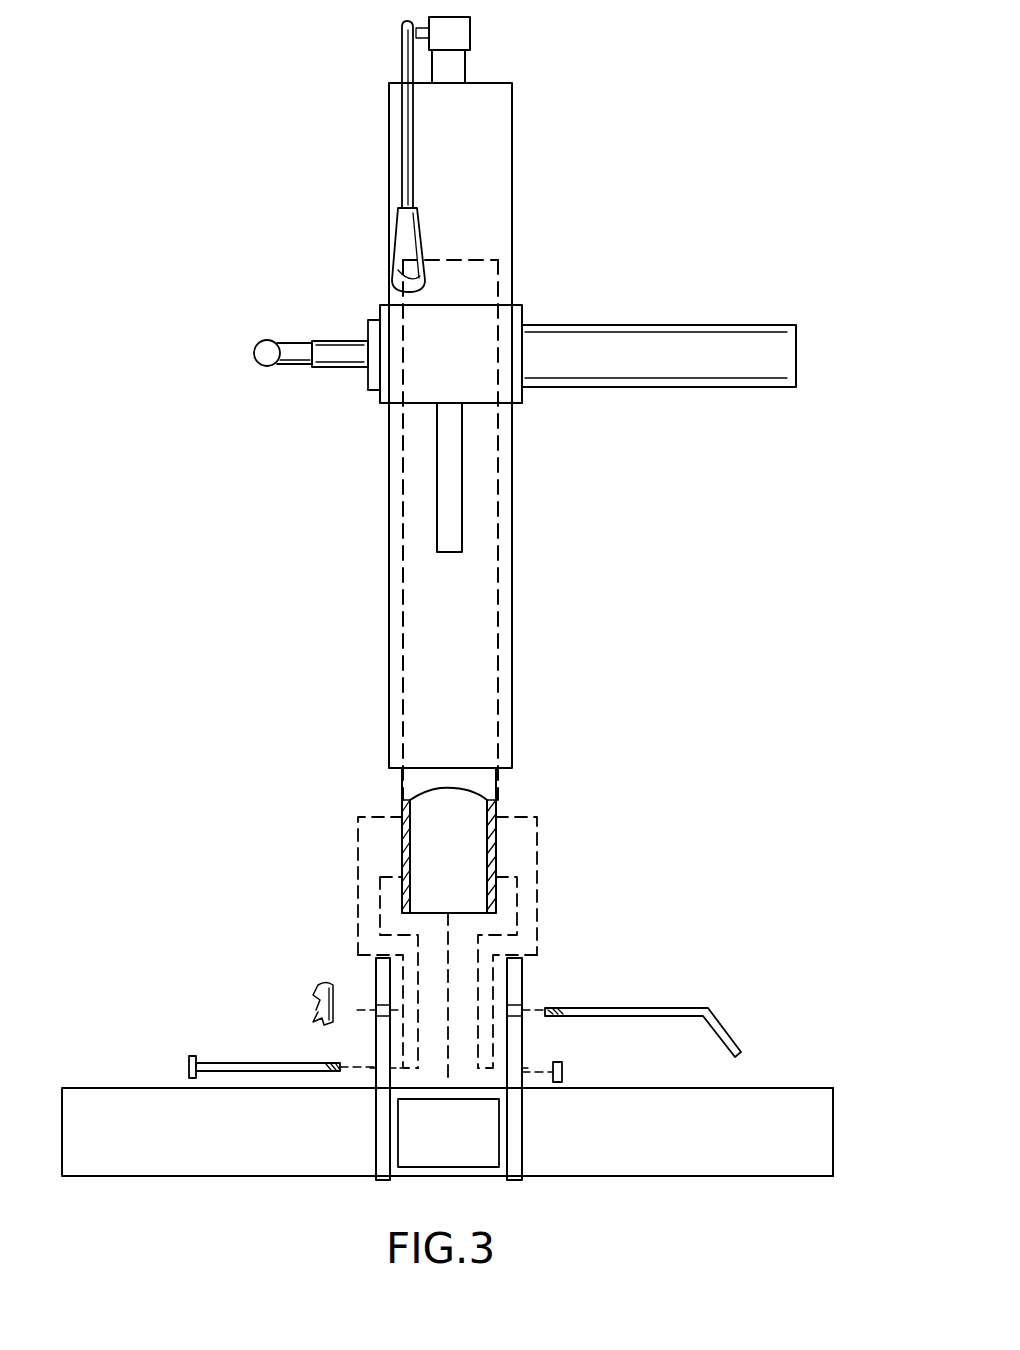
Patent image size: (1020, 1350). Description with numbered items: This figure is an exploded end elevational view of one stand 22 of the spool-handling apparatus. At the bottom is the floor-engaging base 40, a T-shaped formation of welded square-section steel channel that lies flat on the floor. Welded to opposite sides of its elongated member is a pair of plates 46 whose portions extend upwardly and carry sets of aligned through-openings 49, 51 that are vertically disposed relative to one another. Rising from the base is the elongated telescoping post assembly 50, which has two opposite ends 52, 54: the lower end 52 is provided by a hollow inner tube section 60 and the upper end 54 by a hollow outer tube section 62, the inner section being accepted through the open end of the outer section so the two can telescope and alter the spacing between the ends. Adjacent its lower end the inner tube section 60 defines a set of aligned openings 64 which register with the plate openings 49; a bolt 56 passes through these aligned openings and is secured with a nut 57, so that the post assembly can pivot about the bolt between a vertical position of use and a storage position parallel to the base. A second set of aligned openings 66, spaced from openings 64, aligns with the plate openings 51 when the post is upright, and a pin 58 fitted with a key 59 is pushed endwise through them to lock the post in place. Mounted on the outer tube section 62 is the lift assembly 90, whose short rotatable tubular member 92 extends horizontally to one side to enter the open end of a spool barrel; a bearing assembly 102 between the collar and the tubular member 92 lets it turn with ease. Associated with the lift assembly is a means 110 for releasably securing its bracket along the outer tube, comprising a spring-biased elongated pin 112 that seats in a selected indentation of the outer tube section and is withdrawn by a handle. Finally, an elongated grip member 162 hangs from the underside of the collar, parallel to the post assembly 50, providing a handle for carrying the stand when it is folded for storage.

The stand 22 is at (833, 1130).
The floor-engaging base 40 is at (66, 1130).
The plates 46 is at (376, 1036).
The through-openings 49 is at (376, 1066).
The telescoping post assembly 50 is at (512, 553).
The through-openings 51 is at (524, 1012).
The end of the post assembly 52 is at (470, 913).
The end of the post assembly 54 is at (478, 82).
The bolt 56 is at (222, 1063).
The nut 57 is at (570, 1073).
The pin 58 is at (640, 1007).
The key 59 is at (318, 986).
The inner tube section 60 is at (512, 768).
The outer tube section 62 is at (512, 613).
The openings 64 is at (403, 880).
The openings 66 is at (403, 815).
The lift assembly 90 is at (380, 403).
The tubular member 92 is at (617, 325).
The bearing assembly 102 is at (522, 403).
The means for releasably securing 110 is at (326, 302).
The elongated pin 112 is at (300, 368).
The grip member 162 is at (462, 470).